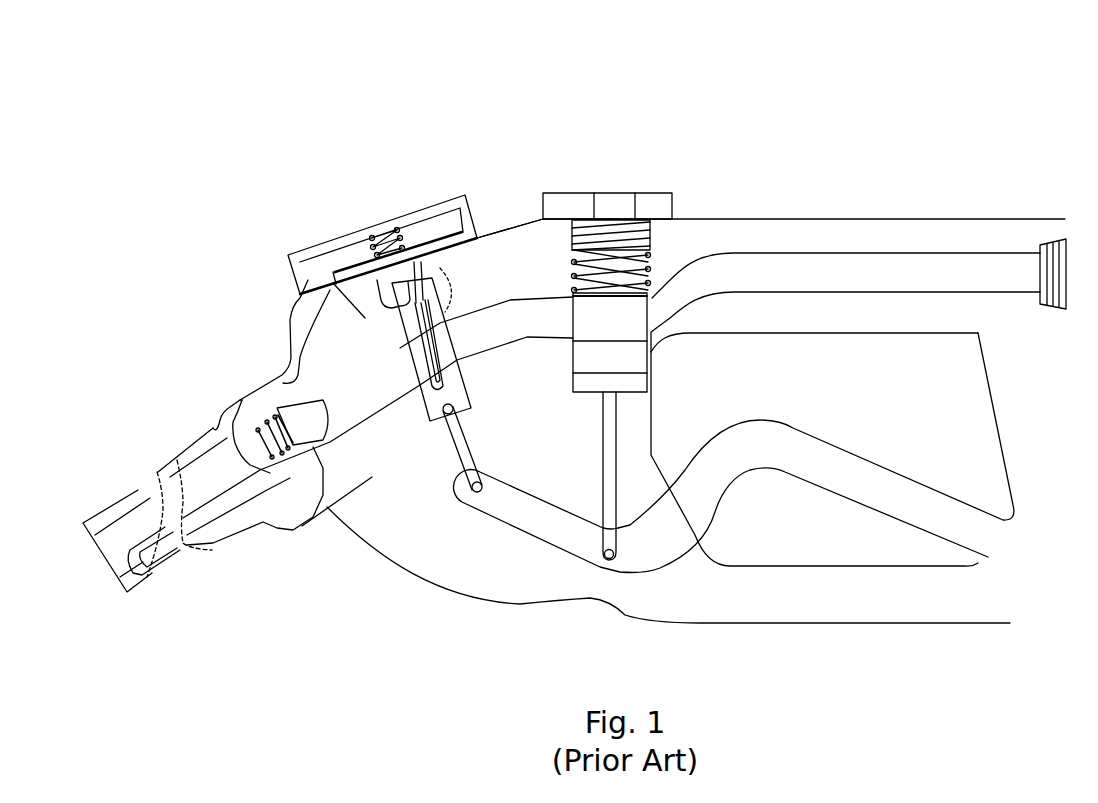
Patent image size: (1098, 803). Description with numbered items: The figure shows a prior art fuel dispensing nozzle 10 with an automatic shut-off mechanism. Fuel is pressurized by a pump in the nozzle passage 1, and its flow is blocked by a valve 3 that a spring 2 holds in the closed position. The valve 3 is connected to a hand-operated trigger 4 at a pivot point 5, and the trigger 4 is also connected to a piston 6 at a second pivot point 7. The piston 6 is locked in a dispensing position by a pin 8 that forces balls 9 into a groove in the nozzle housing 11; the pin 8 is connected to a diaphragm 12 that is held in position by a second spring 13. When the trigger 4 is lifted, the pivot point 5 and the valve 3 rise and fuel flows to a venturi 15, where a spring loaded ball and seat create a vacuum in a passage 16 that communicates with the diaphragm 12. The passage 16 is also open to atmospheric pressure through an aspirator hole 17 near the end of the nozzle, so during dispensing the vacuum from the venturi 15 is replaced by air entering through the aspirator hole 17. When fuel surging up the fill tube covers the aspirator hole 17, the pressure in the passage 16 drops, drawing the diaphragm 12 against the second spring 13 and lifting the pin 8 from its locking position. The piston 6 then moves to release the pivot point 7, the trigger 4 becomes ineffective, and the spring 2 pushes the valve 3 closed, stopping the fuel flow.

The nozzle passage 1 is at (770, 268).
The spring 2 is at (570, 270).
The valve 3 is at (578, 386).
The hand-operated trigger 4 is at (668, 552).
The pivot point 5 is at (602, 553).
The piston 6 is at (410, 415).
The second pivot point 7 is at (470, 488).
The pin 8 is at (437, 302).
The balls 9 is at (448, 268).
The nozzle 10 is at (581, 155).
The nozzle housing 11 is at (527, 232).
The diaphragm 12 is at (358, 272).
The second spring 13 is at (410, 262).
The venturi 15 is at (316, 458).
The passage 16 is at (275, 380).
The aspirator hole 17 is at (146, 594).